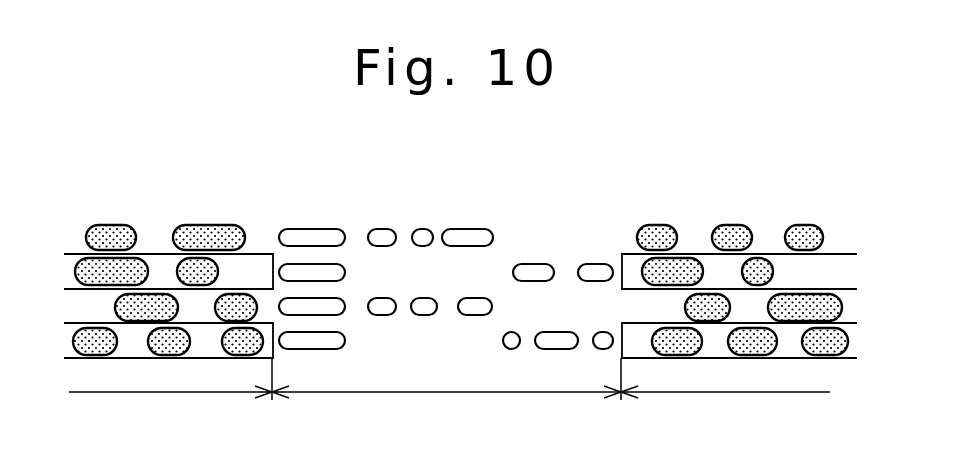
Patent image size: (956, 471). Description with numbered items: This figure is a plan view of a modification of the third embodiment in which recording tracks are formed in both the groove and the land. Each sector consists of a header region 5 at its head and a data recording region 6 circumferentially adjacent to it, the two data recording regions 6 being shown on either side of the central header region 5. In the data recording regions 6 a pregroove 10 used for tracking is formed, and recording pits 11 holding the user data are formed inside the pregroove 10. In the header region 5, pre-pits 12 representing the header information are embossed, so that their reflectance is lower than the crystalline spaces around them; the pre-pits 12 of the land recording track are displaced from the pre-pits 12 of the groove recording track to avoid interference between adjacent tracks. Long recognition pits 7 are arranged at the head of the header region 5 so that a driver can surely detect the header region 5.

The header region 5 is at (455, 404).
The data recording region 6 is at (460, 402).
The recognition pit 7 is at (312, 237).
The pregroove 10 is at (156, 265).
The recording pit 11 is at (210, 232).
The pre-pit 12 is at (382, 237).